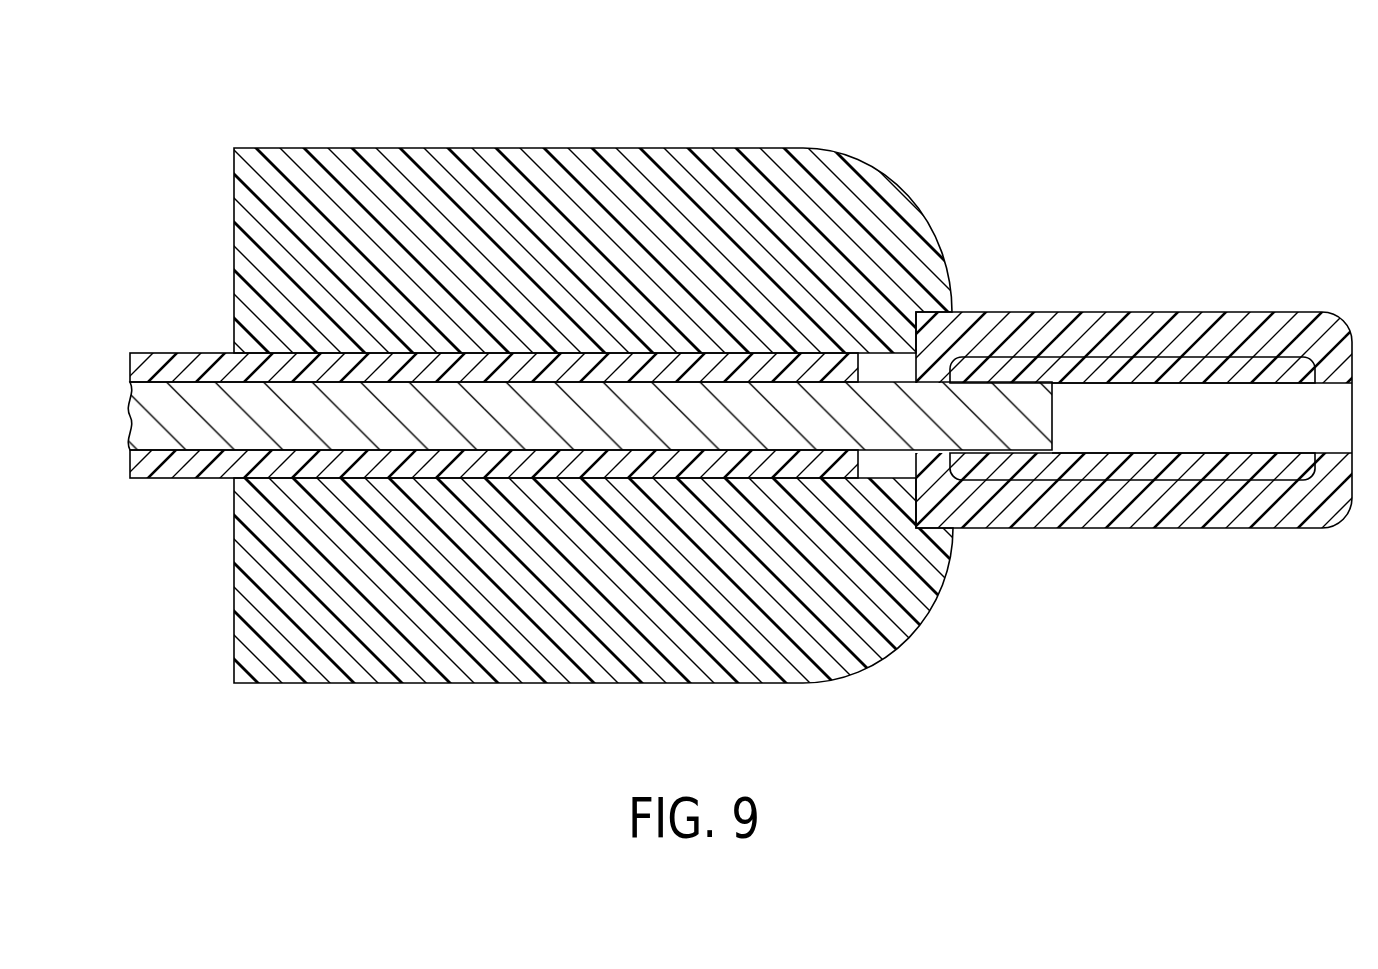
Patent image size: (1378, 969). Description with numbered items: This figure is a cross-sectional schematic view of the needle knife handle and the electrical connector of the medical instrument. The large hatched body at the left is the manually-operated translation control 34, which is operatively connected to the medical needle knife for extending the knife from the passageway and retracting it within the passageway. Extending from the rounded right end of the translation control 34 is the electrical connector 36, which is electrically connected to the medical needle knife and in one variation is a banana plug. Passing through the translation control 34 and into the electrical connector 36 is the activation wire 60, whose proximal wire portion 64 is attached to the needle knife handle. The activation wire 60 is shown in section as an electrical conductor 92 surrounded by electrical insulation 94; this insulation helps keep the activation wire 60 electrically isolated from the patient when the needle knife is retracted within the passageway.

The translation control 34 is at (471, 147).
The electrical connector 36 is at (1163, 312).
The activation wire 60 is at (694, 395).
The proximal wire portion 64 is at (213, 353).
The electrical conductor 92 is at (195, 412).
The electrical insulation 94 is at (183, 478).